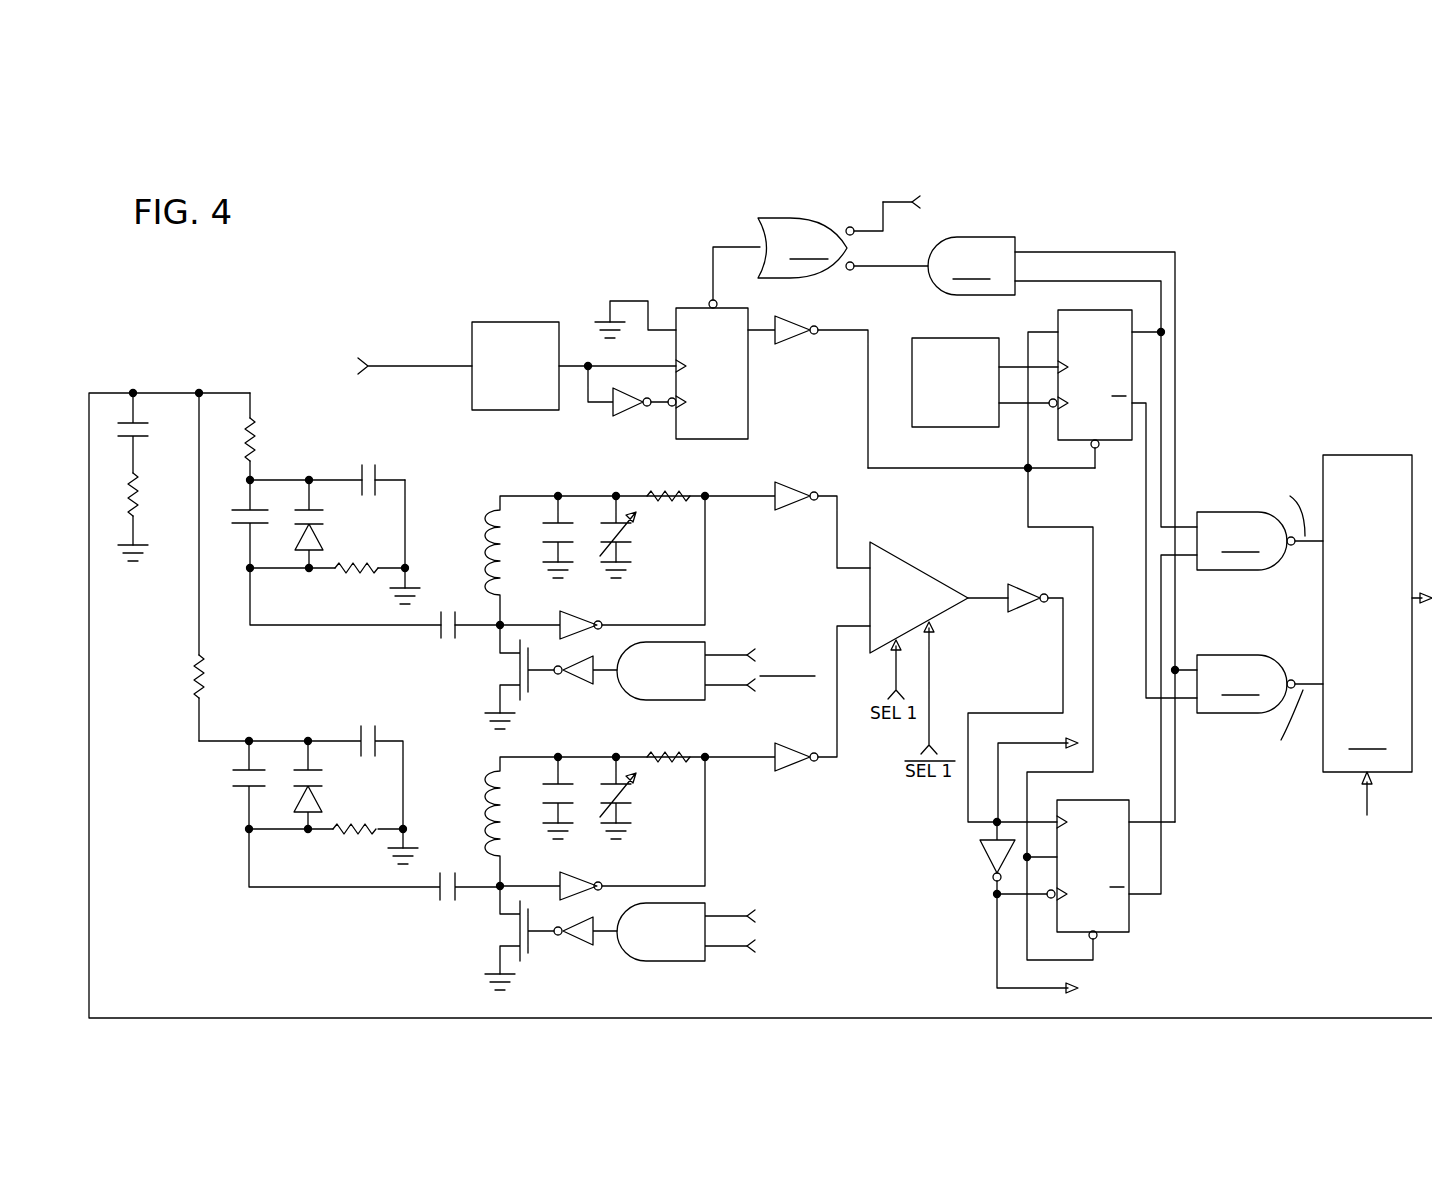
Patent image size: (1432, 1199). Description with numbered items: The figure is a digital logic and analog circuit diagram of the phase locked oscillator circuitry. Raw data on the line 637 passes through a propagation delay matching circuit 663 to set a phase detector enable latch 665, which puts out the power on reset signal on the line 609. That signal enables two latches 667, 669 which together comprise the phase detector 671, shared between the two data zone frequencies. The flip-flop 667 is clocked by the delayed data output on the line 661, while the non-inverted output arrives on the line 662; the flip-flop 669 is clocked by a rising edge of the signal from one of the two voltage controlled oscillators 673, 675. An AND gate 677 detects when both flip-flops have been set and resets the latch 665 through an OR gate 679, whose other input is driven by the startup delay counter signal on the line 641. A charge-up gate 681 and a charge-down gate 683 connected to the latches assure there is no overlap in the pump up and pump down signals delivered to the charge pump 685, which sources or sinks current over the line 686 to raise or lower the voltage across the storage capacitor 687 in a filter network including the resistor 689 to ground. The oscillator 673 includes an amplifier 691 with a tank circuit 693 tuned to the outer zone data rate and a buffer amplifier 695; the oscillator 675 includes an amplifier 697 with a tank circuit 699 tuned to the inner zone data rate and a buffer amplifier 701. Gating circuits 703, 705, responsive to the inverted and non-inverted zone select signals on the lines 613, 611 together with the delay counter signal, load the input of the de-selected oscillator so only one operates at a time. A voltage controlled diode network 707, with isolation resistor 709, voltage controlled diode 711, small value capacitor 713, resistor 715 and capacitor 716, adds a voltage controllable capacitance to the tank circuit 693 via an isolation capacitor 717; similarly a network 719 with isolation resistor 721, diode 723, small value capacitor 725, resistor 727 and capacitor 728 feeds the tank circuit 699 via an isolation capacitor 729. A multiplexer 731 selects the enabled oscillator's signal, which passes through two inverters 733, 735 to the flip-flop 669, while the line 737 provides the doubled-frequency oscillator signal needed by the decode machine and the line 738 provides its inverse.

The line 686 is at (193, 388).
The storage capacitor 687 is at (140, 438).
The resistor 689 is at (139, 520).
The isolation resistor 709 is at (262, 416).
The capacitor 716 is at (385, 478).
The small value capacitor 713 is at (240, 522).
The voltage controlled diode 711 is at (328, 534).
The resistor 715 is at (345, 574).
The isolation capacitor 717 is at (424, 635).
The voltage controlled diode network 707 is at (273, 640).
The isolation resistor 721 is at (191, 678).
The capacitor 728 is at (354, 740).
The small value capacitor 725 is at (242, 791).
The voltage controlled diode 723 is at (328, 804).
The resistor 727 is at (346, 838).
The isolation capacitor 729 is at (433, 897).
The voltage controlled diode network 719 is at (229, 908).
The voltage controlled oscillator 673 is at (473, 666).
The voltage controlled oscillator 675 is at (471, 933).
The line 637 is at (406, 362).
The propagation delay matching circuit 663 is at (521, 322).
The phase detector enable latch 665 is at (748, 401).
The buffer amplifier 695 is at (803, 484).
The output line 641 is at (716, 655).
The OR gate 679 is at (843, 240).
The AND gate 677 is at (1062, 529).
The line 662 is at (1012, 365).
The output line 661 is at (1017, 406).
The latch 667 is at (1118, 445).
The line 609 is at (992, 470).
The amplifier 691 is at (570, 620).
The tank circuit 693 is at (592, 580).
The gating circuit 703 is at (565, 699).
The line 613 is at (724, 688).
The line 611 is at (735, 948).
The multiplexer 731 is at (911, 578).
The inverter 733 is at (1020, 585).
The line 737 is at (1043, 746).
The inverter 735 is at (990, 852).
The line 738 is at (993, 983).
The latch 669 is at (1093, 815).
The phase detector 671 is at (1189, 854).
The charge-up gate 681 is at (1260, 523).
The charge-down gate 683 is at (1260, 709).
The charge pump 685 is at (1375, 653).
The amplifier 697 is at (570, 881).
The tank circuit 699 is at (592, 839).
The gating circuit 705 is at (553, 959).
The buffer amplifier 701 is at (795, 771).